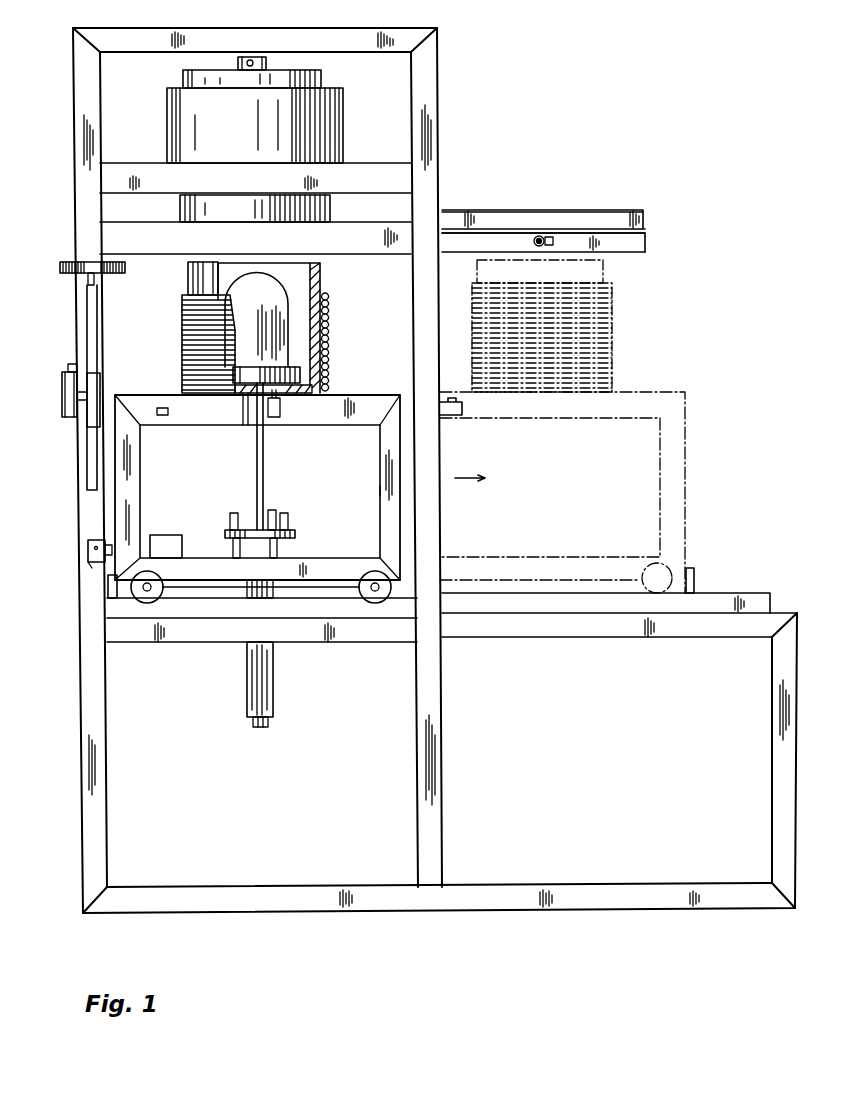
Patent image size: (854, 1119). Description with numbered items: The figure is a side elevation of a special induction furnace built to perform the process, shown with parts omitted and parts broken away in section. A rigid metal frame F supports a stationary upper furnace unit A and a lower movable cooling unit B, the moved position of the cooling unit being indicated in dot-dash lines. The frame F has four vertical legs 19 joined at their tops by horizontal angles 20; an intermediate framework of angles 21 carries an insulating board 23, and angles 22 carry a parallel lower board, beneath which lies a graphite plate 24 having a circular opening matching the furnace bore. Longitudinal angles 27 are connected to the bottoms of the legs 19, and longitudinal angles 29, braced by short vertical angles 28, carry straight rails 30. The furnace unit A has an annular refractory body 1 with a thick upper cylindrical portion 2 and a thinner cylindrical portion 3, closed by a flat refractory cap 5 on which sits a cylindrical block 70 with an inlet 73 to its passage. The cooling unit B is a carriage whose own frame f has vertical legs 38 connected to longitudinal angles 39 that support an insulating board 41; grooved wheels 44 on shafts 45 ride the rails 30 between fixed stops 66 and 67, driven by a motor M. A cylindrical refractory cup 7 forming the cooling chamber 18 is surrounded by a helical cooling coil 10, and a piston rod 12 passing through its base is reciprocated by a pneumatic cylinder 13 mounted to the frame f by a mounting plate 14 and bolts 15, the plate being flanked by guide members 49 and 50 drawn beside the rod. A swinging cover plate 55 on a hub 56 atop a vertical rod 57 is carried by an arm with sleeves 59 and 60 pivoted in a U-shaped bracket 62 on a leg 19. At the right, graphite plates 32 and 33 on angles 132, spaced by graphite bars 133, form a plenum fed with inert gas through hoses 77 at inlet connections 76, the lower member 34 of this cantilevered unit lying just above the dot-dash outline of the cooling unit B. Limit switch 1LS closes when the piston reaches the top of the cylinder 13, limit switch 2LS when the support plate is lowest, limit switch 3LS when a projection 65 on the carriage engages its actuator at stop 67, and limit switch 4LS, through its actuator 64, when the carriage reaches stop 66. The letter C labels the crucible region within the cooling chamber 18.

The rigid metal frame F is at (74, 60).
The stationary upper furnace unit A is at (360, 88).
The lower movable cooling unit B is at (655, 392).
The chamber / bell jar C is at (283, 275).
The carriage frame f is at (382, 490).
The annular refractory body 1 is at (167, 115).
The upper cylindrical portion 2 is at (343, 115).
The cylindrical portion of reduced thickness 3 is at (330, 208).
The refractory cap 5 is at (185, 78).
The refractory heat sink cup 7 is at (190, 277).
The helical copper cooling coil 10 is at (182, 352).
The piston rod 12 is at (263, 472).
The pneumatic cylinder 13 is at (275, 695).
The mounting plate 14 is at (258, 528).
The bolts 15 is at (233, 548).
The cooling chamber 18 is at (320, 292).
The vertical legs 19 is at (78, 178).
The horizontal angles 20 is at (245, 32).
The horizontal metal angles 21 is at (180, 195).
The metal angles 22 is at (206, 243).
The insulating board 23 is at (352, 165).
The graphite plate 24 is at (275, 255).
The horizontal longitudinal angles 27 is at (525, 888).
The short vertical angles 28 is at (775, 785).
The horizontal longitudinal angles 29 is at (240, 640).
The longitudinal rails 30 is at (125, 618).
The graphite plate 32 is at (605, 230).
The graphite plate 33 is at (628, 255).
The arm guide rail 34 is at (648, 240).
The vertical legs 38 is at (385, 520).
The longitudinal horizontal angles 39 is at (190, 418).
The insulating board 41 is at (300, 400).
The grooved wheels 44 is at (380, 600).
The wheel shafts 45 is at (155, 598).
The left guide post 49 is at (228, 528).
The right guide post 50 is at (293, 530).
The refractory cover plate 55 is at (108, 273).
The metal hub 56 is at (88, 280).
The vertical support rod 57 is at (90, 330).
The vertical sleeve 59 is at (92, 428).
The vertical sleeve 60 is at (68, 400).
The U-shaped mounting bracket 62 is at (74, 368).
The actuator of switch 4LS 64 is at (108, 548).
The projection 65 is at (163, 405).
The fixed stop 66 is at (110, 590).
The fixed stop 67 is at (695, 580).
The cylindrical block 70 is at (270, 62).
The inlet 73 is at (256, 60).
The inlet connection 76 is at (542, 236).
The flexible hoses 77 is at (560, 240).
The metal angles 132 is at (520, 210).
The graphite bars 133 is at (500, 240).
The limit switch 1LS is at (272, 512).
The limit switch 2LS is at (275, 418).
The limit switch 3LS is at (462, 412).
The limit switch 4LS is at (90, 548).
The motor M is at (166, 545).